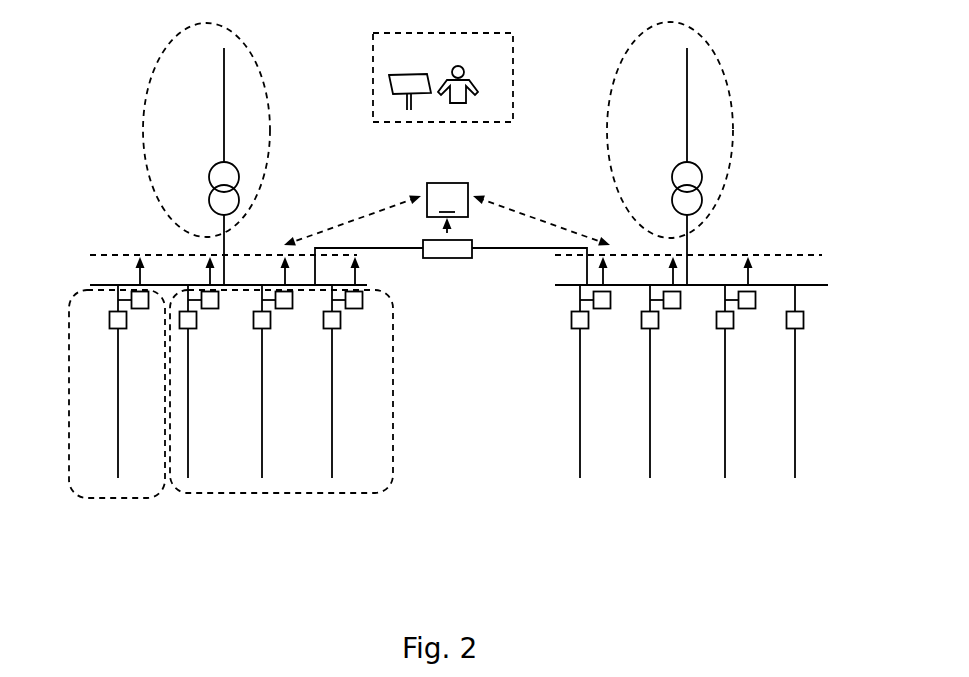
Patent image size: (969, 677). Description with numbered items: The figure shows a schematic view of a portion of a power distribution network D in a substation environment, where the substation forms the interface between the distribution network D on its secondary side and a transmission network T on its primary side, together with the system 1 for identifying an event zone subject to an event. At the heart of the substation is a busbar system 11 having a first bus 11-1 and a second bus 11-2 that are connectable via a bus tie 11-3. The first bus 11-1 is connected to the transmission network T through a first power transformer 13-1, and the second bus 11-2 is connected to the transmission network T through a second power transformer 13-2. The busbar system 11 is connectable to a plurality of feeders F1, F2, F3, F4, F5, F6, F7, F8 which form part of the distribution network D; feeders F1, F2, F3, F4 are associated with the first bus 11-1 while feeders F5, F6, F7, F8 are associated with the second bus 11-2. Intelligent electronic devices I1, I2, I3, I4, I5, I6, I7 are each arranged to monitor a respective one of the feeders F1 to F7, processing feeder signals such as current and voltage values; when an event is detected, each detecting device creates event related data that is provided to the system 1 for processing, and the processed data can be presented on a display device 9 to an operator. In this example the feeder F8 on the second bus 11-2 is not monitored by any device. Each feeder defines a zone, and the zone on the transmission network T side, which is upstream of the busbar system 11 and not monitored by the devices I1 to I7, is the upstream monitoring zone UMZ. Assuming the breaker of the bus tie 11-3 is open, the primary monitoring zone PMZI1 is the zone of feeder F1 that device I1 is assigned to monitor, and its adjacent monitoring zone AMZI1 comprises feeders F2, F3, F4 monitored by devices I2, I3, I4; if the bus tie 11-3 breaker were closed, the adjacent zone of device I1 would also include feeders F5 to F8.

The system 1 is at (447, 214).
The display device 9 is at (389, 84).
The busbar system 11 is at (452, 352).
The first bus 11-1 is at (88, 283).
The second bus 11-2 is at (818, 285).
The bus tie 11-3 is at (452, 258).
The first power transformer 13-1 is at (238, 163).
The second power transformer 13-2 is at (701, 163).
The transmission network T is at (220, 115).
The upstream monitoring zone UMZ is at (154, 33).
The primary monitoring zone PMZI1 is at (150, 483).
The adjacent monitoring zone AMZI1 is at (365, 489).
The intelligent electronic device I1 is at (140, 309).
The intelligent electronic device I2 is at (210, 309).
The intelligent electronic device I3 is at (284, 309).
The intelligent electronic device I4 is at (354, 309).
The intelligent electronic device I5 is at (602, 309).
The intelligent electronic device I6 is at (672, 309).
The intelligent electronic device I7 is at (747, 309).
The feeder F1 is at (118, 433).
The feeder F2 is at (188, 373).
The feeder F3 is at (262, 433).
The feeder F4 is at (332, 433).
The feeder F5 is at (580, 433).
The feeder F6 is at (650, 433).
The feeder F7 is at (725, 433).
The feeder F8 is at (795, 433).
The distribution network D is at (760, 561).